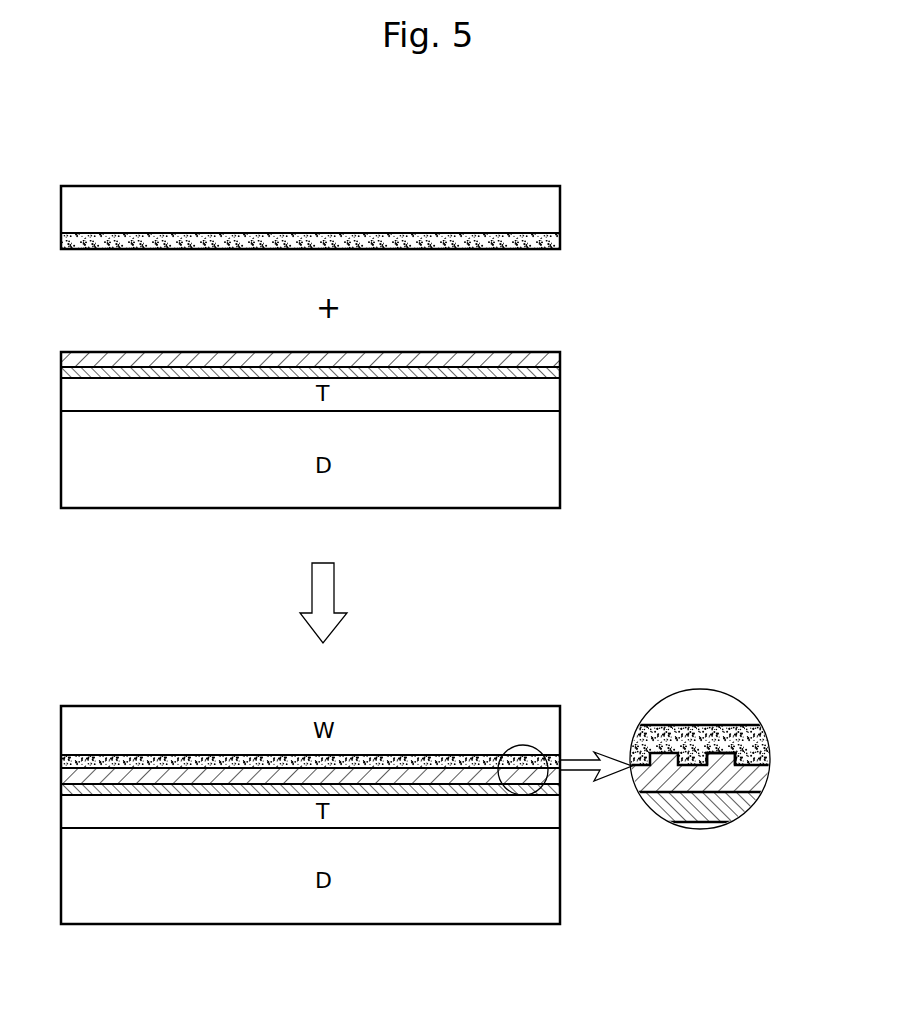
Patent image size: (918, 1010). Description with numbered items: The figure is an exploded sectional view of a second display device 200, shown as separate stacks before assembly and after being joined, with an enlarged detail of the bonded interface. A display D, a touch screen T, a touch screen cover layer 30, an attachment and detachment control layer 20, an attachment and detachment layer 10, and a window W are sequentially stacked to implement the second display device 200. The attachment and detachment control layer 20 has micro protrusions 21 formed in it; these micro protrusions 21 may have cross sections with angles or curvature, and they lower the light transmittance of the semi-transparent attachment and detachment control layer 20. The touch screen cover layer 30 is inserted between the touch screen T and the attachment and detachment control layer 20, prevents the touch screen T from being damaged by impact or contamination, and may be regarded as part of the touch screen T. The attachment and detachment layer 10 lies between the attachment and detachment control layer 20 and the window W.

The second display device 200 is at (554, 158).
The attachment and detachment layer 10 is at (560, 244).
The attachment and detachment control layer 20 is at (560, 358).
The micro protrusion 21 is at (722, 760).
The touch screen cover layer 30 is at (560, 376).